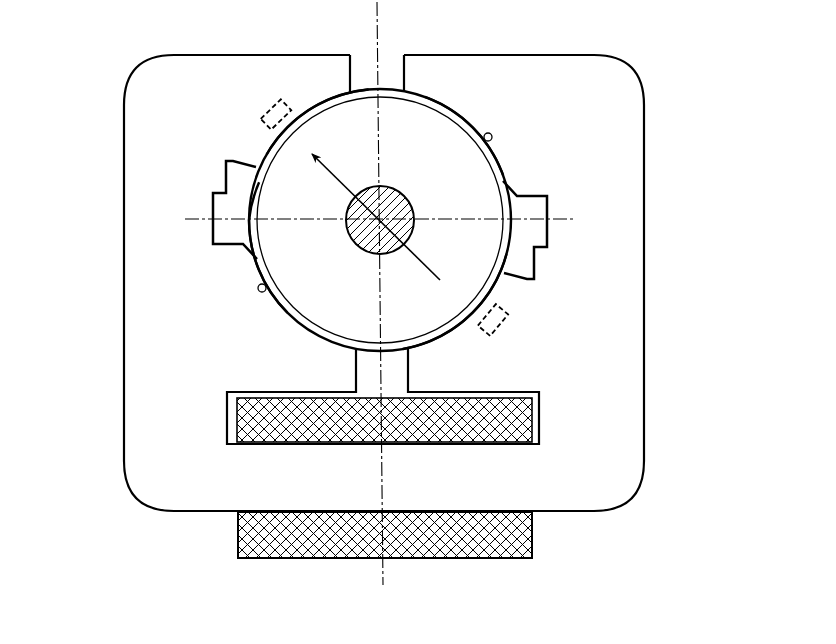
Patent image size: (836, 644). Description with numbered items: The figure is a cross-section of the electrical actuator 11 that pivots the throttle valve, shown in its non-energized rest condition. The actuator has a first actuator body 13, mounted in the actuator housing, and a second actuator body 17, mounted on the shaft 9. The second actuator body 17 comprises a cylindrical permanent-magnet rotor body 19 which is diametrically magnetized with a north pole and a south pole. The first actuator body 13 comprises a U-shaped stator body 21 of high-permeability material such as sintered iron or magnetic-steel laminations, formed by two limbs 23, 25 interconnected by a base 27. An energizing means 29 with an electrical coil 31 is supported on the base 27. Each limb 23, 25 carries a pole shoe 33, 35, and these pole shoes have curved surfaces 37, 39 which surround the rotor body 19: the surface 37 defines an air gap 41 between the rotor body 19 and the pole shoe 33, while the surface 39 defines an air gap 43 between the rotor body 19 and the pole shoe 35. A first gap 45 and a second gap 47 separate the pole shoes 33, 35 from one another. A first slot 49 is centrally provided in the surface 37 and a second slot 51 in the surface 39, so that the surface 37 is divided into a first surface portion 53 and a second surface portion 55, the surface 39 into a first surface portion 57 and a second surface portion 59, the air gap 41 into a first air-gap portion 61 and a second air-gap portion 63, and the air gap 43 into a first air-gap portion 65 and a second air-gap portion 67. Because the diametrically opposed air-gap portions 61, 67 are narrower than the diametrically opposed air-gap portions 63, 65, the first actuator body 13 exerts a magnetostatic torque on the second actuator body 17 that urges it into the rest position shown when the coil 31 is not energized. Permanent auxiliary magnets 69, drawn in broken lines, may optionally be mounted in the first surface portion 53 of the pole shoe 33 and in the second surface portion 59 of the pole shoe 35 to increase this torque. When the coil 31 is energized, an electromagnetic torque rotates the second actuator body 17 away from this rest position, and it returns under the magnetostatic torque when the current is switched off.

The shaft 9 is at (400, 200).
The electrical actuator 11 is at (100, 479).
The first actuator body 13 is at (393, 282).
The U-shaped stator body 21 is at (640, 176).
The second actuator body 17 is at (383, 198).
The permanent-magnet rotor body 19 is at (422, 133).
The limb 23 is at (148, 145).
The limb 25 is at (607, 275).
The base 27 is at (556, 492).
The energizing means 29 is at (385, 562).
The electrical coil 31 is at (325, 540).
The pole shoe 33 is at (210, 95).
The pole shoe 35 is at (560, 83).
The curved surface 37 is at (264, 88).
The first surface portion 53 is at (303, 98).
The second surface portion 55 is at (250, 283).
The curved surface 39 is at (605, 136).
The first surface portion 57 is at (490, 137).
The second surface portion 59 is at (448, 343).
The air gap 41 is at (322, 56).
The first air-gap portion 61 is at (323, 78).
The second air-gap portion 63 is at (250, 264).
The air gap 43 is at (483, 79).
The first air-gap portion 65 is at (463, 112).
The second air-gap portion 67 is at (503, 288).
The first gap 45 is at (368, 75).
The second gap 47 is at (375, 370).
The first slot 49 is at (225, 229).
The second slot 51 is at (545, 234).
The permanent auxiliary magnet 69 is at (260, 125).